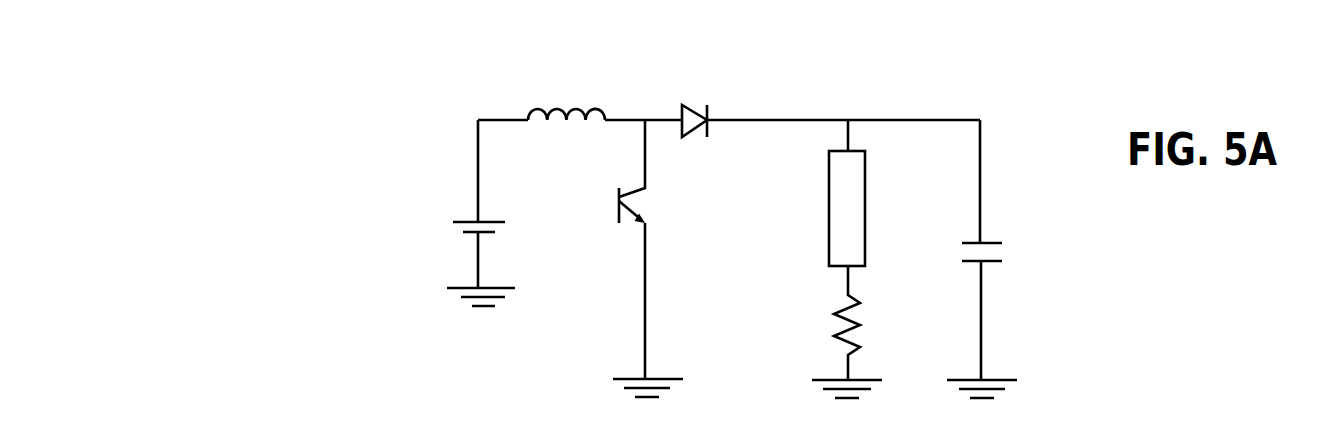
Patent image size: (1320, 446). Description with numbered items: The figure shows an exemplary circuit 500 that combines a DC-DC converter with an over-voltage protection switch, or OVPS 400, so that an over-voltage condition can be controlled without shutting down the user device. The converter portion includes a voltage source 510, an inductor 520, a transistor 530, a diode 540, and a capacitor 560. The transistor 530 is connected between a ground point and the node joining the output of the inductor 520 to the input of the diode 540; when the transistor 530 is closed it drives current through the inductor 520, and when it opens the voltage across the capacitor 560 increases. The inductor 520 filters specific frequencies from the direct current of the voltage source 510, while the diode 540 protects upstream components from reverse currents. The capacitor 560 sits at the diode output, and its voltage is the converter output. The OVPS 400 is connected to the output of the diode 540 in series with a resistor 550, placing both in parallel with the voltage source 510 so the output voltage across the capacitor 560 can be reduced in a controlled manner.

The circuit 500 is at (364, 69).
The voltage source 510 is at (467, 232).
The inductor 520 is at (529, 108).
The transistor 530 is at (619, 214).
The diode 540 is at (689, 106).
The over-voltage protection switch 400 is at (866, 185).
The resistor 550 is at (860, 320).
The capacitor 560 is at (995, 243).